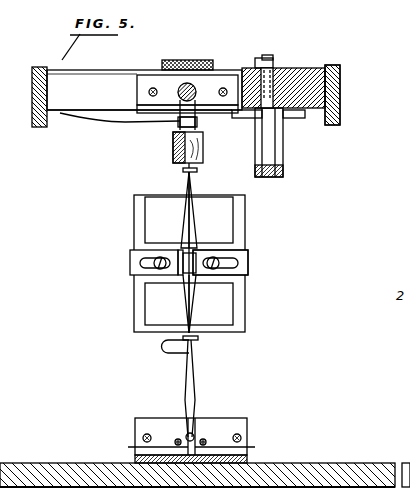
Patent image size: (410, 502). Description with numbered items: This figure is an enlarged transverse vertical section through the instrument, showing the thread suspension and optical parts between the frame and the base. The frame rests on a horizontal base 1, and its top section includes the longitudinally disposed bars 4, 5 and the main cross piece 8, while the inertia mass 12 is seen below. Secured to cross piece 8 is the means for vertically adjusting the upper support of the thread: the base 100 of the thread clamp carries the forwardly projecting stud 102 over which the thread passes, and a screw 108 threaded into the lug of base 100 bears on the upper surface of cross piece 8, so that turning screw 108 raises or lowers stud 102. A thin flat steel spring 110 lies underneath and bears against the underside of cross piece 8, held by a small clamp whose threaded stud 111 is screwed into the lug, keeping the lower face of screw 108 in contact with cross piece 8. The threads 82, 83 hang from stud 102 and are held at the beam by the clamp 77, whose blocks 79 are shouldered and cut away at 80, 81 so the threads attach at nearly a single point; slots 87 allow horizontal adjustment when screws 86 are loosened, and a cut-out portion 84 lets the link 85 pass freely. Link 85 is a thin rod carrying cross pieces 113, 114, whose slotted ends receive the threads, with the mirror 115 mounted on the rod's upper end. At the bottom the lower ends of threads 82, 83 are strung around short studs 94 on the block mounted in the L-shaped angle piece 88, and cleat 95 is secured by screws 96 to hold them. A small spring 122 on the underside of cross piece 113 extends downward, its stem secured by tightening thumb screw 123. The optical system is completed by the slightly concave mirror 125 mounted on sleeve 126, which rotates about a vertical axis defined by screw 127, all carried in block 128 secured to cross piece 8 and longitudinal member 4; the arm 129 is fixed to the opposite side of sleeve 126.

The horizontal base 1 is at (328, 478).
The longitudinally disposed bar 4 is at (340, 100).
The longitudinally disposed bar 5 is at (32, 94).
The cross piece 8 is at (94, 80).
The inertia mass 12 is at (246, 208).
The clamp 77 is at (132, 252).
The block 79 is at (136, 262).
The shouldered and cut away portion 80 is at (210, 258).
The shouldered and cut away portion 81 is at (172, 278).
The thread 82 is at (191, 200).
The thread 83 is at (185, 205).
The cut-out portion 84 is at (196, 272).
The link 85 is at (186, 312).
The screw 86 is at (157, 268).
The slot 87 is at (240, 262).
The L-shaped angle piece 88 is at (135, 460).
The stud 94 is at (177, 439).
The cleat 95 is at (235, 425).
The screw 96 is at (143, 437).
The base of the thread clamp 100 is at (137, 91).
The stud 102 is at (182, 89).
The screw 108 is at (190, 60).
The steel spring 110 is at (120, 122).
The threaded stud 111 is at (180, 122).
The cross piece 113 is at (198, 338).
The cross piece 114 is at (197, 170).
The mirror 115 is at (175, 150).
The spring 122 is at (185, 384).
The thumb screw 123 is at (205, 418).
The concave mirror 125 is at (280, 170).
The sleeve 126 is at (292, 72).
The screw 127 is at (266, 68).
The block 128 is at (340, 72).
The arm 129 is at (284, 148).